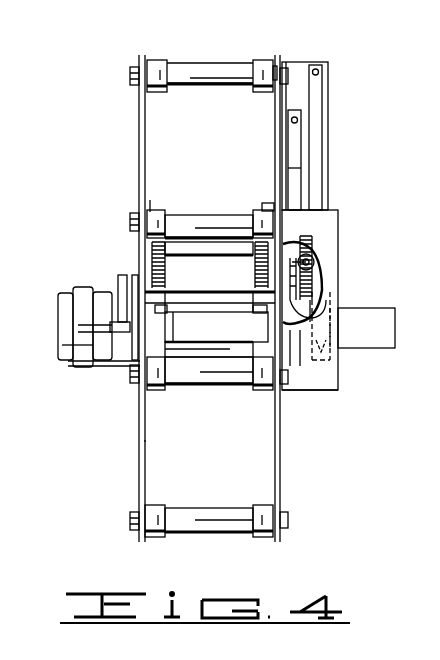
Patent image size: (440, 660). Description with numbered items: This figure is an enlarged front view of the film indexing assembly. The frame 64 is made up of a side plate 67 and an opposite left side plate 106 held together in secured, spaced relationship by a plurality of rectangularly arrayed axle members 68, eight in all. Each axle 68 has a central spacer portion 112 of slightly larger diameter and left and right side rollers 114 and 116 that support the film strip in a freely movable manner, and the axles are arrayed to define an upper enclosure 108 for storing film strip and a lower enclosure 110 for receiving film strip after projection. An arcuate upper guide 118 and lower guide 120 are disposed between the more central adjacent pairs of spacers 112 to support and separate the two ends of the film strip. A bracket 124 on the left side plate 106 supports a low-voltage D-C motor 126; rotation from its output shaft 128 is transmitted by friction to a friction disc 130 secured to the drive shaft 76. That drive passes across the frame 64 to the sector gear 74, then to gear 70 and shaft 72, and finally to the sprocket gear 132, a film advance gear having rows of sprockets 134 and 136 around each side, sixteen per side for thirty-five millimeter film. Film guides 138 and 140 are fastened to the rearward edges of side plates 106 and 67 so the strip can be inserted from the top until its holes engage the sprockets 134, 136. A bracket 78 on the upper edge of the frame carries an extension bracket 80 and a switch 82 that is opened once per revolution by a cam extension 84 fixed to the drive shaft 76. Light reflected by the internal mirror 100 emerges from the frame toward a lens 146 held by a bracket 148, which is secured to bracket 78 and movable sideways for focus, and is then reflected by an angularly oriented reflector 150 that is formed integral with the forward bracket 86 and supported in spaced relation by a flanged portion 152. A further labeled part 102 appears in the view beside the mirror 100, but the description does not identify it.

The frame 64 is at (131, 441).
The side plate 67 is at (280, 445).
The axle members 68 is at (130, 73).
The gear 70 is at (316, 258).
The shaft 72 is at (150, 278).
The sector gear 74 is at (334, 297).
The drive shaft 76 is at (124, 278).
The bracket 78 is at (328, 78).
The extension bracket 80 is at (298, 193).
The switch 82 is at (312, 242).
The cam extension 84 is at (318, 281).
The bracket 86 is at (332, 390).
The internal reflector mirror 100 is at (210, 336).
The roller 102 is at (270, 328).
The left side plate 106 is at (139, 513).
The upper enclosure 108 is at (225, 139).
The lower enclosure 110 is at (224, 457).
The central spacer portion 112 is at (200, 72).
The left side roller 114 is at (157, 60).
The right side roller 116 is at (259, 62).
The upper guide 118 is at (226, 210).
The lower guide 120 is at (222, 372).
The bracket 124 is at (80, 368).
The motor 126 is at (70, 347).
The output shaft 128 is at (66, 338).
The friction disc 130 is at (118, 292).
The sprocket gear 132 is at (245, 285).
The sprockets 134 is at (200, 291).
The sprockets 136 is at (286, 228).
The film guide 138 is at (150, 200).
The film guide 140 is at (268, 203).
The lens 146 is at (320, 365).
The bracket 148 is at (318, 110).
The reflector 150 is at (393, 312).
The flanged portion 152 is at (336, 334).